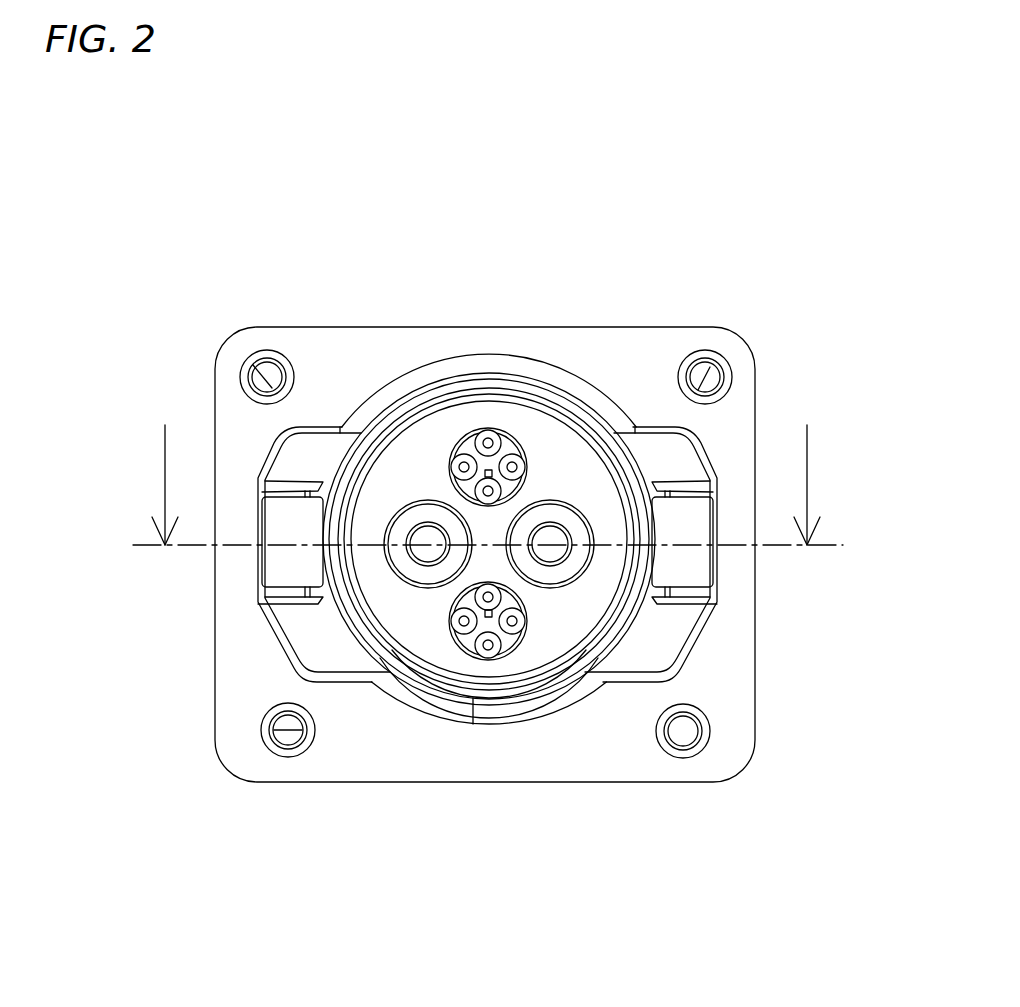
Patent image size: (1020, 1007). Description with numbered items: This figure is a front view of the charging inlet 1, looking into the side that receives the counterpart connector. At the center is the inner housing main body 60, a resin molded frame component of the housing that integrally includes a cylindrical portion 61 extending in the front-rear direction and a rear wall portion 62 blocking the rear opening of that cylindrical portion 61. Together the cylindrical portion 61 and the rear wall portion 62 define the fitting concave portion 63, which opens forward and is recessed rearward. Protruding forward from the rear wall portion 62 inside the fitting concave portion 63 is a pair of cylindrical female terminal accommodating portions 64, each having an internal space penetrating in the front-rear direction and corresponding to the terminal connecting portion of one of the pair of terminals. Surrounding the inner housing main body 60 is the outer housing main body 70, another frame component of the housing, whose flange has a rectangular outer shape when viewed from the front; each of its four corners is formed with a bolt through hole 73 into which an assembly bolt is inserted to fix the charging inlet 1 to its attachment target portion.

The charging inlet 1 is at (260, 242).
The inner housing main body 60 is at (473, 727).
The cylindrical portion 61 is at (505, 389).
The rear wall portion 62 is at (426, 457).
The fitting concave portion 63 is at (417, 630).
The female terminal accommodating portion 64 is at (385, 556).
The outer housing main body 70 is at (762, 708).
The bolt through hole 73 is at (248, 360).